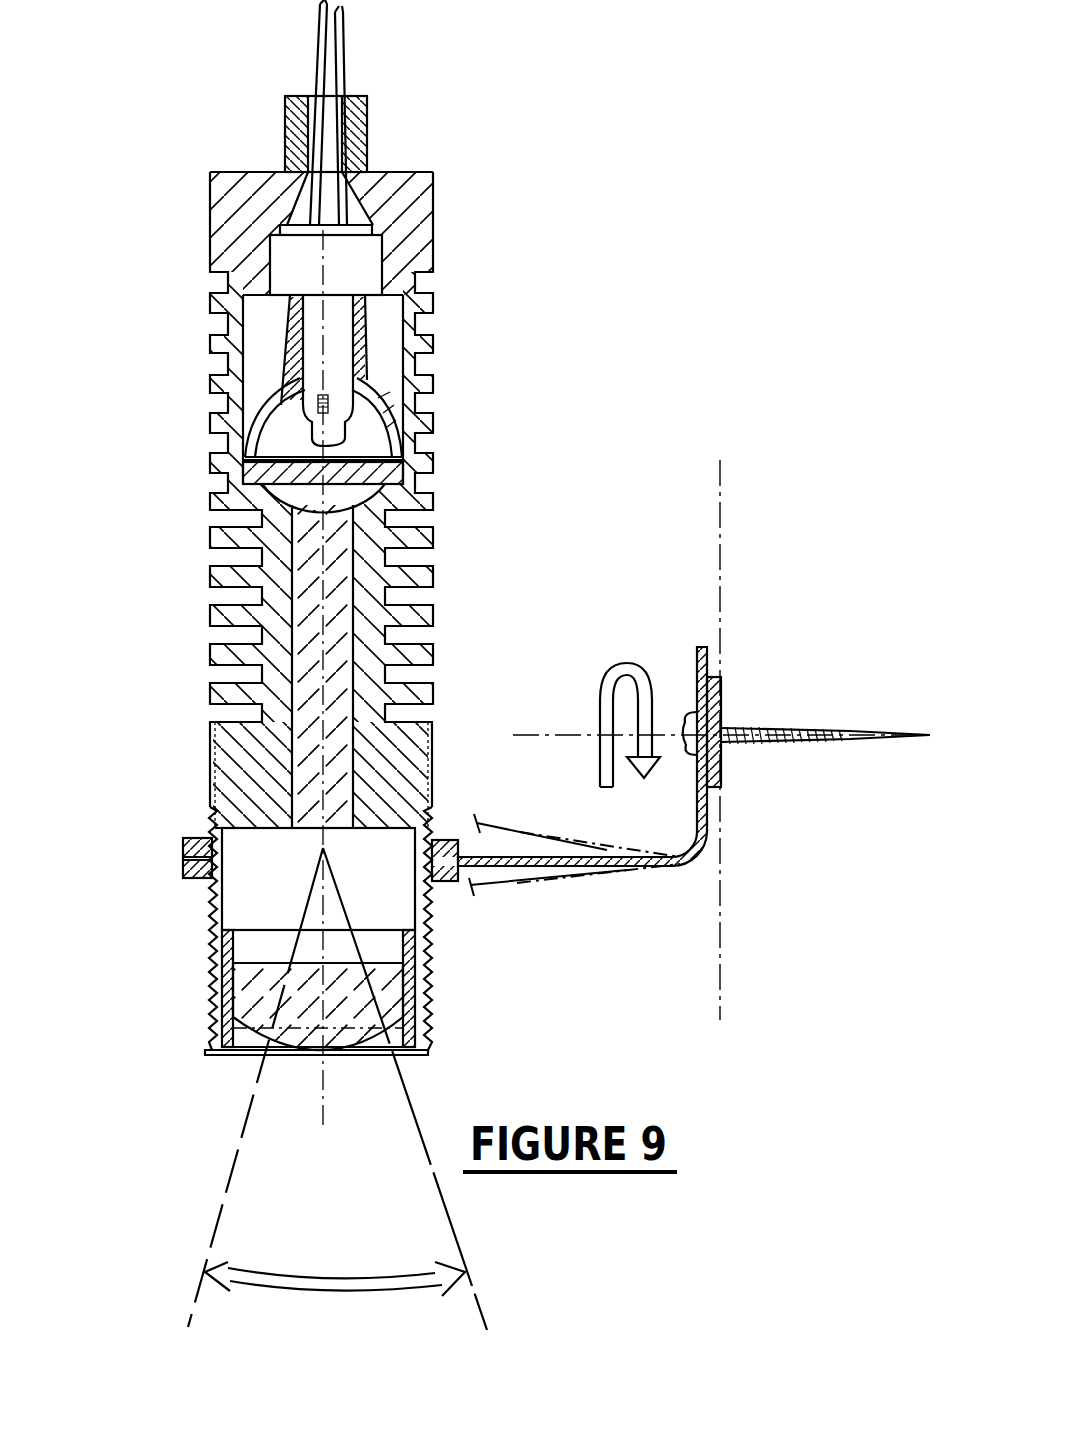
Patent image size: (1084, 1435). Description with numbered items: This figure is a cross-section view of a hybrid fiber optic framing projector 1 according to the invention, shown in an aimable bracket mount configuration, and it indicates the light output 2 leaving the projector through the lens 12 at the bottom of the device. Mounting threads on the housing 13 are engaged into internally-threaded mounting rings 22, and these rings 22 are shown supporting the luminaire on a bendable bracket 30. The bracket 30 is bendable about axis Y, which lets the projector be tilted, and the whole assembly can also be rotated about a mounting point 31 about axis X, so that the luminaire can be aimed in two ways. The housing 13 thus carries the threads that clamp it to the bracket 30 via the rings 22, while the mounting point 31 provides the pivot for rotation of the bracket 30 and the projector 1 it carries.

The lamp assembly 1 is at (458, 556).
The light beam 2 is at (336, 1101).
The lens 12 is at (392, 1022).
The housing 13 is at (440, 735).
The internally-threaded mounting rings 22 is at (193, 838).
The bendable bracket 30 is at (505, 868).
The mounting point 31 is at (684, 712).